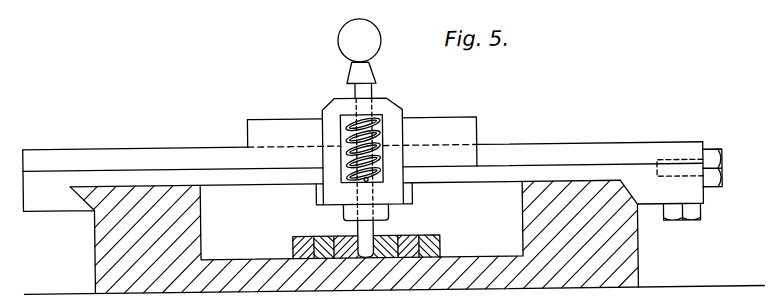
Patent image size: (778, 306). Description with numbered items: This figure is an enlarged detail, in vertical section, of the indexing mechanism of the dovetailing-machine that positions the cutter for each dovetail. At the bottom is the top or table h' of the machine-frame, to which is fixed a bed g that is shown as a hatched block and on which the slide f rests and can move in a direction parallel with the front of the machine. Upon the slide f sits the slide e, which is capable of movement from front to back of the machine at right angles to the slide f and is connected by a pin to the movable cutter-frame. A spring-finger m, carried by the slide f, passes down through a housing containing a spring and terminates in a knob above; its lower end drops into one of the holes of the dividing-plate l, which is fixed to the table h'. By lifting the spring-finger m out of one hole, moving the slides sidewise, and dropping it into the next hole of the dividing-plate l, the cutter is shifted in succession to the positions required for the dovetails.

The spring-finger m is at (372, 90).
The slide e is at (362, 135).
The slide f is at (373, 176).
The bed g is at (364, 218).
The dividing-plate l is at (366, 237).
The top or table h' is at (394, 278).